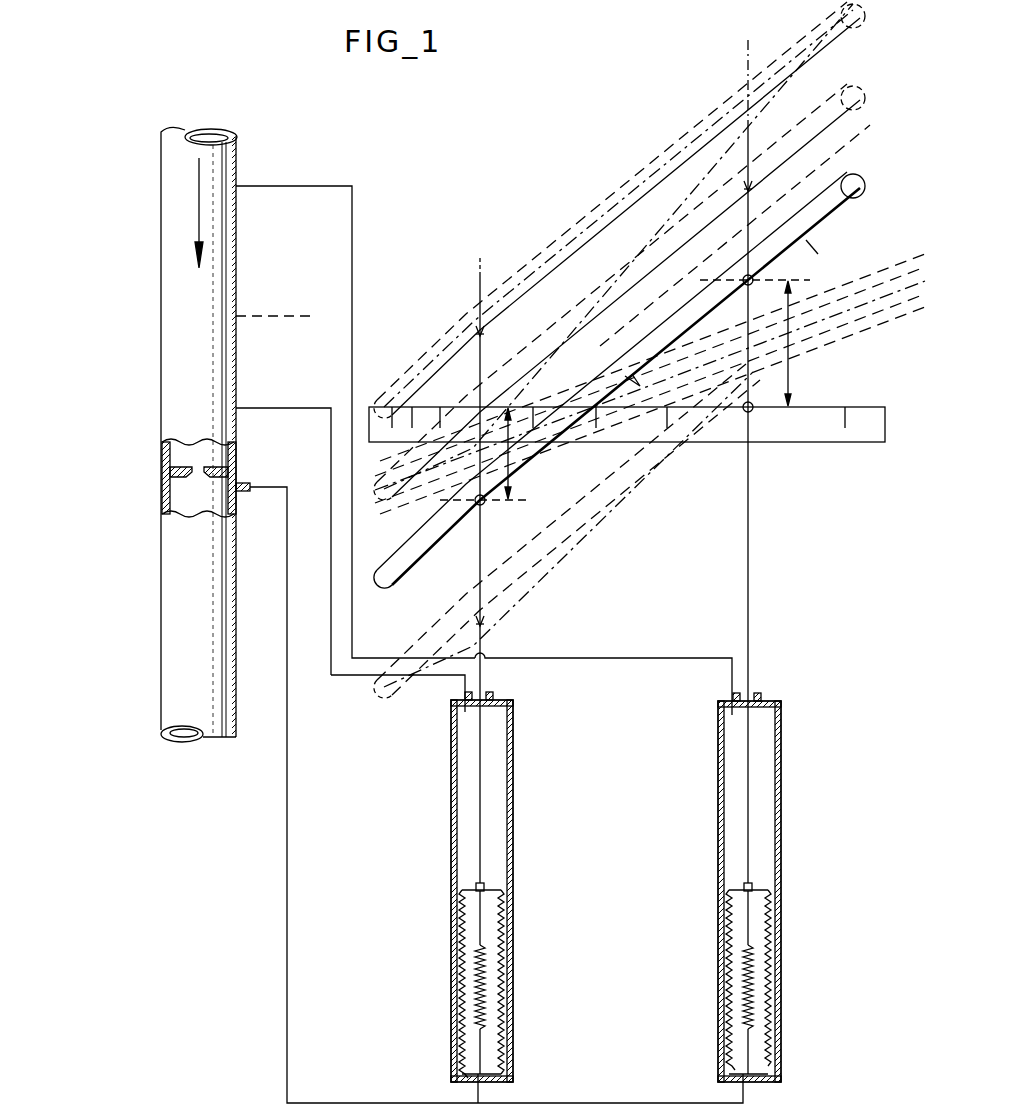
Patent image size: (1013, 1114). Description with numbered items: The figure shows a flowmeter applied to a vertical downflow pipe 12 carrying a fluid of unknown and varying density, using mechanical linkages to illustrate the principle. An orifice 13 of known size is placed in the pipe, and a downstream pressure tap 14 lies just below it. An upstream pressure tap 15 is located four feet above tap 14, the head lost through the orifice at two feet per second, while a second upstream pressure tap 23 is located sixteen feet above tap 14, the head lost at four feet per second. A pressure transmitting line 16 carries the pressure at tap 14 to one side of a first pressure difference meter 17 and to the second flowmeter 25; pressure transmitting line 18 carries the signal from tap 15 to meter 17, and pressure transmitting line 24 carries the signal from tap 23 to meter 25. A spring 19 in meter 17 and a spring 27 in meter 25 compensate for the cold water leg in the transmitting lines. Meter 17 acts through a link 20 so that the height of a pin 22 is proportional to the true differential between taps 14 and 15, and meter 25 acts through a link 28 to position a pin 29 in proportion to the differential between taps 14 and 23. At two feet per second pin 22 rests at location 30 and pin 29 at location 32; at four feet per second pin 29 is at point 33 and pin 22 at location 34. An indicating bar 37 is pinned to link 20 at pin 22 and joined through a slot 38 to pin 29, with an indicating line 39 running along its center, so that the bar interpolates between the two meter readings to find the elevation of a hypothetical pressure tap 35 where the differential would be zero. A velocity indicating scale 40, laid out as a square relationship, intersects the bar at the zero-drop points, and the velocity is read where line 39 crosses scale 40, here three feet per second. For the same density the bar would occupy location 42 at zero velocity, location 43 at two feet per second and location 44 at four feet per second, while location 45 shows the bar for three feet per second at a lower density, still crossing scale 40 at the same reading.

The vertical pipe 12 is at (178, 163).
The orifice 13 is at (168, 466).
The pressure tap 14 is at (244, 486).
The upstream pressure tap 15 is at (300, 408).
The pressure transmitting line 16 is at (287, 832).
The pressure difference meter 17 is at (451, 840).
The pressure transmitting line 18 is at (345, 677).
The spring 19 is at (470, 1000).
The link 20 is at (484, 566).
The pin 22 is at (487, 505).
The upstream pressure tap 23 is at (298, 185).
The pressure transmitting line 24 is at (661, 658).
The second flowmeter 25 is at (718, 840).
The spring 27 is at (740, 1005).
The link 28 is at (760, 503).
The pin 29 is at (746, 278).
The location 30 is at (484, 352).
The location 32 is at (758, 187).
The point 33 is at (748, 404).
The location 34 is at (490, 626).
The hypothetical pressure tap 35 is at (281, 316).
The indicating bar 37 is at (850, 220).
The slot 38 is at (818, 246).
The indicating line 39 is at (866, 195).
The velocity indicating scale 40 is at (865, 445).
The location 42 is at (700, 120).
The location 43 is at (858, 130).
The location 44 is at (855, 352).
The location 45 is at (873, 303).